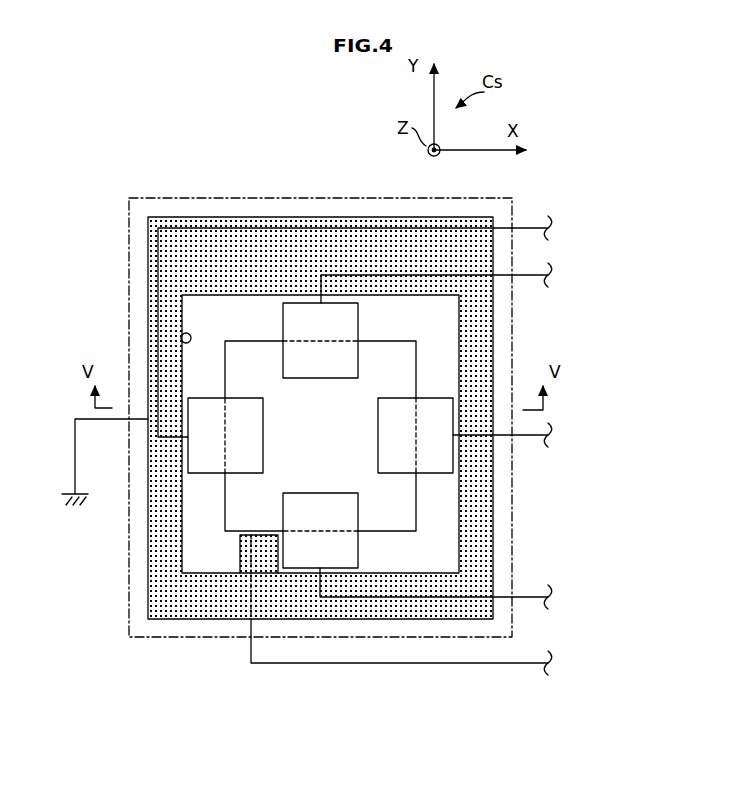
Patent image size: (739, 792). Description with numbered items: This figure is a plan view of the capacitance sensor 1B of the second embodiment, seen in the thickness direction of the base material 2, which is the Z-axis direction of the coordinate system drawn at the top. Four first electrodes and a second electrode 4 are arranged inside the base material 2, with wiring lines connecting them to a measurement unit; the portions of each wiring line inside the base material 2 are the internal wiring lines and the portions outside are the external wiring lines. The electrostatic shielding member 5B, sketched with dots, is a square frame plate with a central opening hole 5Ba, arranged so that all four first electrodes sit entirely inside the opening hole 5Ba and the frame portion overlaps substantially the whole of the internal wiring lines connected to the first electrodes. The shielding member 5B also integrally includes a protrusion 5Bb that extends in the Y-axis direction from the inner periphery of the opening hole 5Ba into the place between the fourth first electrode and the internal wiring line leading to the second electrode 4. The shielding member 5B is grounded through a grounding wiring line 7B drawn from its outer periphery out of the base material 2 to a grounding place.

The capacitance sensor 1B is at (213, 129).
The base material 2 is at (516, 303).
The second electrode 4 is at (380, 351).
The electrostatic shielding member 5B is at (176, 268).
The opening hole 5Ba is at (181, 340).
The protrusion 5Bb is at (240, 557).
The grounding wiring line 7B is at (78, 437).